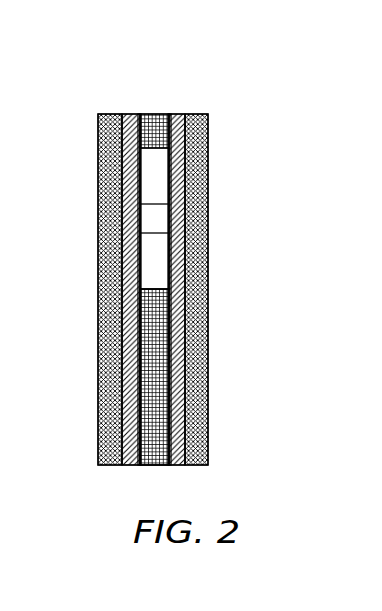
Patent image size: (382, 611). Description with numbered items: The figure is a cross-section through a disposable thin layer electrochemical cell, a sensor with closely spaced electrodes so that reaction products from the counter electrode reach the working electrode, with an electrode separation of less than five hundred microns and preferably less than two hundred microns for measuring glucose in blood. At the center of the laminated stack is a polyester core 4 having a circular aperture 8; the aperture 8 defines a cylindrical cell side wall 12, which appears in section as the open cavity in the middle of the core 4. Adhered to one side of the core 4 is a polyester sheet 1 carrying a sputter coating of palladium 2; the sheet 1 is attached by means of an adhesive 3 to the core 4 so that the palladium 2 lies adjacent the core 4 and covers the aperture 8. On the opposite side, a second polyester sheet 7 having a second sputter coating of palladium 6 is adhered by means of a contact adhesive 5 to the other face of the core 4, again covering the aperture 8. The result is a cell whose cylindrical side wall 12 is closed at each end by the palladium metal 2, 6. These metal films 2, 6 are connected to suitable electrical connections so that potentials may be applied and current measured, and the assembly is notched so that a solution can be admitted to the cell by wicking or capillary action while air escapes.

The polyester sheet 1 is at (108, 113).
The sputter coating of palladium 2 is at (124, 113).
The adhesive 3 is at (139, 113).
The polyester core 4 is at (154, 113).
The contact adhesive 5 is at (168, 113).
The second sputter coating of palladium 6 is at (181, 113).
The second polyester sheet 7 is at (198, 113).
The circular aperture 8 is at (155, 183).
The cylindrical cell side wall 12 is at (155, 289).